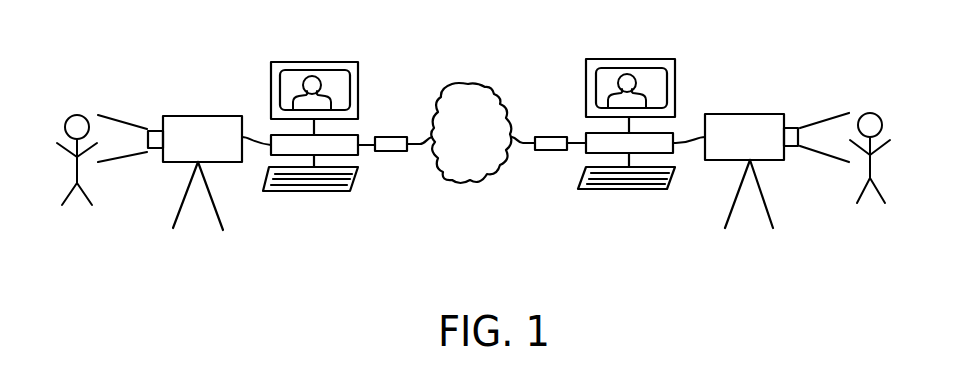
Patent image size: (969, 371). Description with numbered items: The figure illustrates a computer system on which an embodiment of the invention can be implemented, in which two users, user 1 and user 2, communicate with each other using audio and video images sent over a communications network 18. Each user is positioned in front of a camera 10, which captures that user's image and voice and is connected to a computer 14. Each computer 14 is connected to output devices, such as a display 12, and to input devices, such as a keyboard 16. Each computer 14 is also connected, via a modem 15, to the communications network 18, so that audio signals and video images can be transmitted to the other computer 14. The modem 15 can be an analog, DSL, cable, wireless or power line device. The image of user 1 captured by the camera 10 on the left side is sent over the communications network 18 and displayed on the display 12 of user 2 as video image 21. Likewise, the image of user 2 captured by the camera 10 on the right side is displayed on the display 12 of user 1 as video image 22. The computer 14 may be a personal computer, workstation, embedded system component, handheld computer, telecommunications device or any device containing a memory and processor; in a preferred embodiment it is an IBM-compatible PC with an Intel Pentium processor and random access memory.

The user 1 is at (75, 210).
The user 2 is at (878, 207).
The camera 10 is at (192, 115).
The display 12 is at (358, 73).
The computer 14 is at (358, 133).
The modem 15 is at (397, 153).
The keyboard 16 is at (340, 192).
The communications network 18 is at (471, 133).
The video image 21 is at (635, 67).
The video image 22 is at (337, 70).